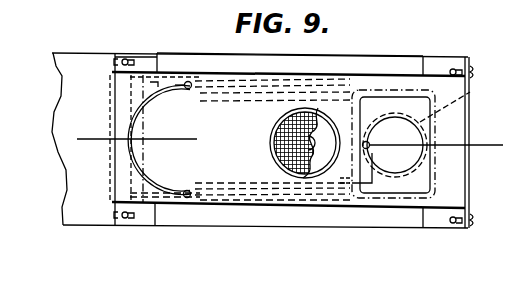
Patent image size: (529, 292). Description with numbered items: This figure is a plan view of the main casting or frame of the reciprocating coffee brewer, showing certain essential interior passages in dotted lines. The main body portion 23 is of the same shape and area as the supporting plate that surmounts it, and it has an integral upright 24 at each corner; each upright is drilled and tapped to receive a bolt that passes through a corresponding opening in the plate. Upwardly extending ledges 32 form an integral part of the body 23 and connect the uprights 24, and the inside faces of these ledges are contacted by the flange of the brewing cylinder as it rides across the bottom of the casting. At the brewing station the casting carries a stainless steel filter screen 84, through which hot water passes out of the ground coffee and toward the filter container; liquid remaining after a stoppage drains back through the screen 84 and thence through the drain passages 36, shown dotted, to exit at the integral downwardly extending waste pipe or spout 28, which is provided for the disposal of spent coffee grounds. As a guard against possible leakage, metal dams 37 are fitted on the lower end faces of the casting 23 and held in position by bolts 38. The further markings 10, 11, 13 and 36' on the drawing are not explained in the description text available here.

The vehicle accessory carrier assembly 10 is at (77, 203).
The section line 11- 11 is at (90, 140).
The dimension line 13 is at (190, 63).
The main body portion 23 is at (401, 63).
The integral upright 24 is at (143, 62).
The pipe or spout 28 is at (470, 92).
The upwardly extending ledges 32 is at (350, 74).
The drain passages 36 is at (268, 172).
The D-shaped support member 36' is at (130, 109).
The metal dams 37 is at (467, 127).
The bolts 38 is at (116, 115).
The filter screen 84 is at (283, 126).